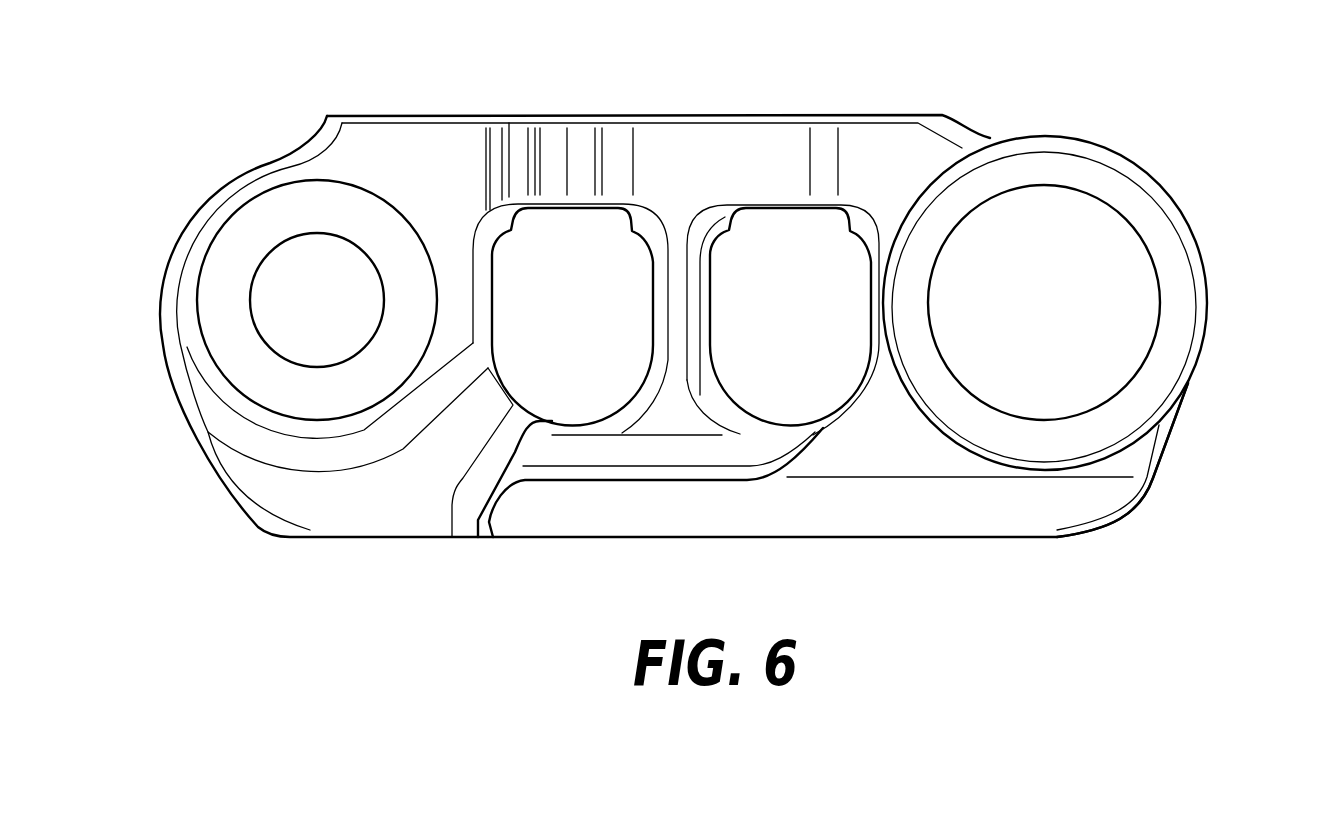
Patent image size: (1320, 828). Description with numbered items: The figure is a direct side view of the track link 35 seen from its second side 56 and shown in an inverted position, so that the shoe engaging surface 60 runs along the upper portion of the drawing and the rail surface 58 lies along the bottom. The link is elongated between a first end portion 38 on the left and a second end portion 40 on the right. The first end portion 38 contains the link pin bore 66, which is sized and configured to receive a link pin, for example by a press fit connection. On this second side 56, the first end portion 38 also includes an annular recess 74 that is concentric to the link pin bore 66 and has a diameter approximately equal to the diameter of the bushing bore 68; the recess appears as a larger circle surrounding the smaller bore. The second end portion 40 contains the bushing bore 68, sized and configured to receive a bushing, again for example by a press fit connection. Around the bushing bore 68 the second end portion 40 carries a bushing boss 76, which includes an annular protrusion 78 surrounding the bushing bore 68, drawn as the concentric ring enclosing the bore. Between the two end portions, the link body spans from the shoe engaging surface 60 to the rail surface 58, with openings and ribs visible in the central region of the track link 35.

The track link 35 is at (800, 69).
The first end portion 38 is at (148, 212).
The second end portion 40 is at (1205, 360).
The second side 56 is at (427, 501).
The rail surface 58 is at (693, 538).
The shoe engaging surface 60 is at (700, 114).
The link pin bore 66 is at (262, 336).
The bushing bore 68 is at (928, 318).
The annular recess 74 is at (335, 203).
The bushing boss 76 is at (1038, 435).
The annular protrusion 78 is at (1130, 170).